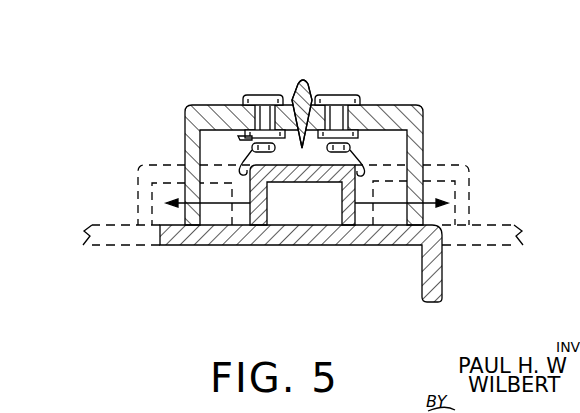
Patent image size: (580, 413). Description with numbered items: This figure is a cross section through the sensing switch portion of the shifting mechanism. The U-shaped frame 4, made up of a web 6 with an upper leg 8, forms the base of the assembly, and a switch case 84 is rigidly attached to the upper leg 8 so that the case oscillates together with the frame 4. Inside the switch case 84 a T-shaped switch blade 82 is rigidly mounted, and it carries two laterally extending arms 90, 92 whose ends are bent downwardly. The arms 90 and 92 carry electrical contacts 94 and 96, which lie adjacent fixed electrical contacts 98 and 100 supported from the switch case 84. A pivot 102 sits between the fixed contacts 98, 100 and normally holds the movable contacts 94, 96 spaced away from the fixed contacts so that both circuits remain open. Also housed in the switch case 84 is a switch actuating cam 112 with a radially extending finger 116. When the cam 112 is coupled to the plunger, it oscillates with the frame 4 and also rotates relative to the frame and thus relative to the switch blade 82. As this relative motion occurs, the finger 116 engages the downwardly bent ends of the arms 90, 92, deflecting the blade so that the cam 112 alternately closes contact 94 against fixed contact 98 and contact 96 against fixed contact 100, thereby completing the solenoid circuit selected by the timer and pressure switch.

The U-shaped frame 4 is at (303, 263).
The web 6 is at (432, 283).
The upper leg 8 is at (190, 240).
The T-shaped switch blade 82 is at (326, 186).
The switch case 84 is at (206, 111).
The laterally extending arm 90 is at (250, 154).
The laterally extending arm 92 is at (372, 153).
The electrical contact 94 is at (245, 138).
The electrical contact 96 is at (352, 146).
The fixed electrical contact 98 is at (262, 118).
The fixed electrical contact 100 is at (338, 117).
The pivot 102 is at (292, 90).
The switch actuating cam 112 is at (275, 182).
The radially extending finger 116 is at (138, 193).